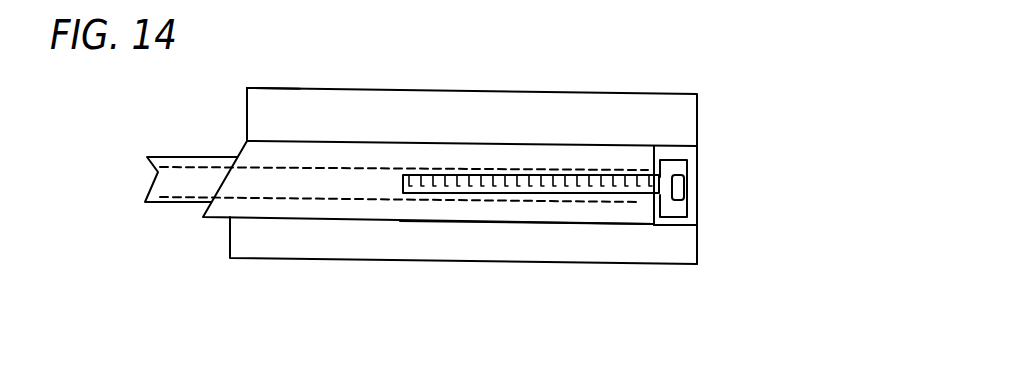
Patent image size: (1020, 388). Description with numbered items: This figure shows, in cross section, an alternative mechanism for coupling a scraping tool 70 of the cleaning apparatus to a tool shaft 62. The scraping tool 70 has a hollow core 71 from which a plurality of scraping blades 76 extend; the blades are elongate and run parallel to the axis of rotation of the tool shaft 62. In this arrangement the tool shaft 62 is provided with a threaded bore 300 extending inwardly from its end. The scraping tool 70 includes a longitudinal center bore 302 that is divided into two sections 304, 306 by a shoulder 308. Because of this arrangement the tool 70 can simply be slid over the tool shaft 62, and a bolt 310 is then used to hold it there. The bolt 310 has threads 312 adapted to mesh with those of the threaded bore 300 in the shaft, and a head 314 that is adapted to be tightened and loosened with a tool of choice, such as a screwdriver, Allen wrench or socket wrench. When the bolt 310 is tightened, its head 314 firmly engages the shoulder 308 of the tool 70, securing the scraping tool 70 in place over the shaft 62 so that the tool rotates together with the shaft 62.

The tool shaft 62 is at (212, 155).
The scraping tool 70 is at (583, 92).
The hollow core 71 is at (300, 218).
The scraping blades 76 is at (278, 87).
The threaded bore 300 is at (383, 183).
The longitudinal center bore 302 is at (339, 124).
The first section of center bore 304 is at (498, 224).
The second section of center bore 306 is at (665, 226).
The shoulder 308 is at (653, 152).
The bolt 310 is at (704, 167).
The threads 312 is at (492, 183).
The head 314 is at (680, 208).